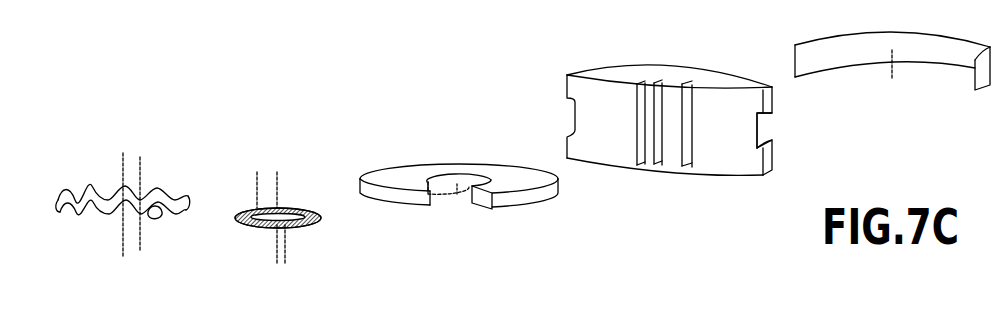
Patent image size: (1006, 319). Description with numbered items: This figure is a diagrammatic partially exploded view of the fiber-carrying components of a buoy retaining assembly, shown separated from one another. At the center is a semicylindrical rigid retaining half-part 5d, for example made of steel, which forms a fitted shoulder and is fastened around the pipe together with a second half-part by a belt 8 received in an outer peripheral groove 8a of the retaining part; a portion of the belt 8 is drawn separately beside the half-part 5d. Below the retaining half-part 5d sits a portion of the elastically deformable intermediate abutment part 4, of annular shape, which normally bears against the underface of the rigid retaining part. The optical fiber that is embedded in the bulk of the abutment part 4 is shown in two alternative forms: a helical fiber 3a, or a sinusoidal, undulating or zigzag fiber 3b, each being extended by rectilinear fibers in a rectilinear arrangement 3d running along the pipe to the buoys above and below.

The sinusoidal or undulating or zigzag fiber 3b is at (95, 189).
The rectilinear arrangement 3d is at (138, 172).
The helical fiber 3a is at (291, 208).
The intermediate abutment part 4 is at (520, 219).
The retaining half-part 5d is at (600, 93).
The outer peripheral groove 8a is at (757, 130).
The belt 8 is at (942, 71).